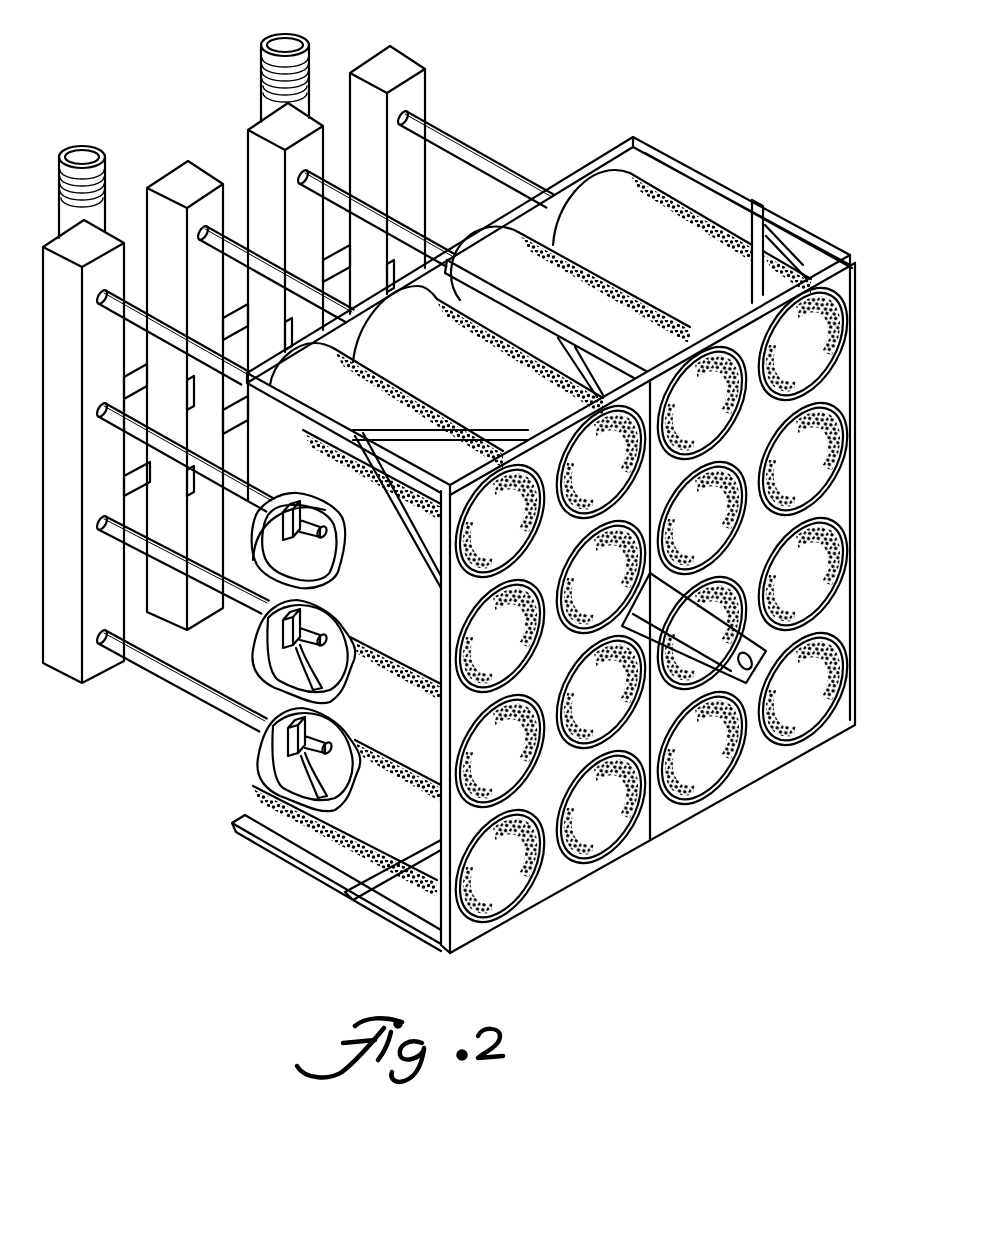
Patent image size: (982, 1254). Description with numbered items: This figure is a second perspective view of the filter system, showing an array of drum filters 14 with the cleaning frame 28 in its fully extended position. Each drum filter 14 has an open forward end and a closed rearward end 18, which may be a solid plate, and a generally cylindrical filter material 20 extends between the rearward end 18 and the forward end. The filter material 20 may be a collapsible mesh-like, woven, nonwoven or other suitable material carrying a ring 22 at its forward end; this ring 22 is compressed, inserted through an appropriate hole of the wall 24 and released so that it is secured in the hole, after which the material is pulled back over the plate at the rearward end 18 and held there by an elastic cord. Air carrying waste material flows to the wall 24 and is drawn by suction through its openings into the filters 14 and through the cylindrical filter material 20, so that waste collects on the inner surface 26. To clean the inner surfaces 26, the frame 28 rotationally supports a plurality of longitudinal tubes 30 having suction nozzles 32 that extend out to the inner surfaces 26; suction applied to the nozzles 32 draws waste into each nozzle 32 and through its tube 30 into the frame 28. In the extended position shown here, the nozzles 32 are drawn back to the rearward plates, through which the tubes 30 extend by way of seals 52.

The drum filter 14 is at (708, 233).
The closed rearward end 18 is at (297, 783).
The cylindrical filter material 20 is at (658, 203).
The ring 22 is at (840, 298).
The wall 24 is at (670, 613).
The inner surface 26 is at (504, 885).
The frame 28 is at (73, 670).
The tube 30 is at (177, 675).
The suction nozzle 32 is at (268, 660).
The seal 52 is at (265, 756).